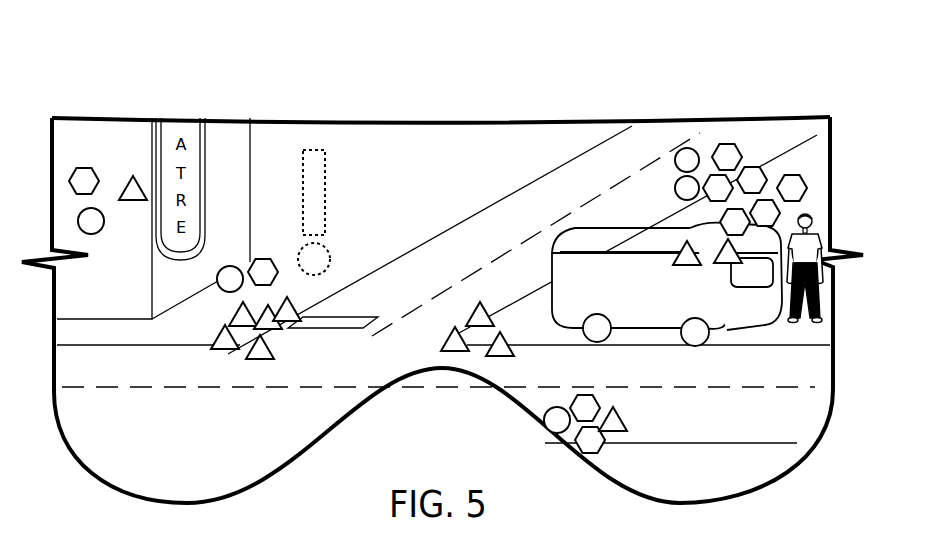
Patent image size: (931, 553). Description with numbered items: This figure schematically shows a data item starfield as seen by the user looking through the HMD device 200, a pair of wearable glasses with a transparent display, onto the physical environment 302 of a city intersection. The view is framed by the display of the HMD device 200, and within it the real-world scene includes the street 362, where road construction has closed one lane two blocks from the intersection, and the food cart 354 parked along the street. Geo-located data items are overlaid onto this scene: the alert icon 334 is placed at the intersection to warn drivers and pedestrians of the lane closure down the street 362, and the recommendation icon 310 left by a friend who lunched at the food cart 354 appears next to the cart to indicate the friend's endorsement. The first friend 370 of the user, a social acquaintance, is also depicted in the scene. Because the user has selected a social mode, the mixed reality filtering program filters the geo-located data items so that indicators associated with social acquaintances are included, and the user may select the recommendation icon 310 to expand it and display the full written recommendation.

The HMD device 200 is at (122, 85).
The physical environment 302 is at (199, 429).
The recommendation icon 310 is at (807, 188).
The alert icon 334 is at (325, 199).
The food cart 354 is at (607, 299).
The street 362 is at (472, 265).
The first friend 370 is at (818, 297).